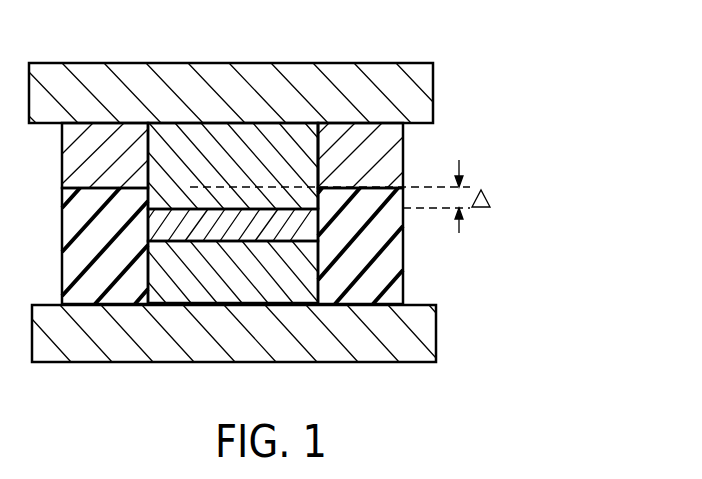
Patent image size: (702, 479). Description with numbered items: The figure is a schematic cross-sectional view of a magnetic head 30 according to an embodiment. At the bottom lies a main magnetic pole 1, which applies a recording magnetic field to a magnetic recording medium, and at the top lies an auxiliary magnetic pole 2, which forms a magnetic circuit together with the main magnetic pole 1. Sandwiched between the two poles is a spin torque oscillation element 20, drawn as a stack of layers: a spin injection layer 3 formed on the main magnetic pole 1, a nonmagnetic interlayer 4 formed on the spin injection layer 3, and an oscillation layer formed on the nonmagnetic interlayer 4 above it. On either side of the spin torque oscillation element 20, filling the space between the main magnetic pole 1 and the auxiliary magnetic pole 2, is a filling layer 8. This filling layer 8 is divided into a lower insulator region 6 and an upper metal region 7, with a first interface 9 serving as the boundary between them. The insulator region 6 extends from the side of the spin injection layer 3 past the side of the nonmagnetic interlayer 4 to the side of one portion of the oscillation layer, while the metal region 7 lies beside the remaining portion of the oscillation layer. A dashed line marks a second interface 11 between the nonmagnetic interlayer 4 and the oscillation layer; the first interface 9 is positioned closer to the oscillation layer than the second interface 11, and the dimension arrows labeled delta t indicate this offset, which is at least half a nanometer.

The main magnetic pole 1 is at (430, 333).
The auxiliary magnetic pole 2 is at (428, 90).
The spin injection layer 3 is at (303, 280).
The nonmagnetic interlayer 4 is at (297, 225).
The insulator region 6 is at (403, 168).
The metal region 7 is at (403, 133).
The filling layer 8 is at (502, 103).
The first interface 9 is at (340, 188).
The second interface 11 is at (185, 208).
The spin torque oscillation element 20 is at (502, 232).
The magnetic head 30 is at (570, 109).